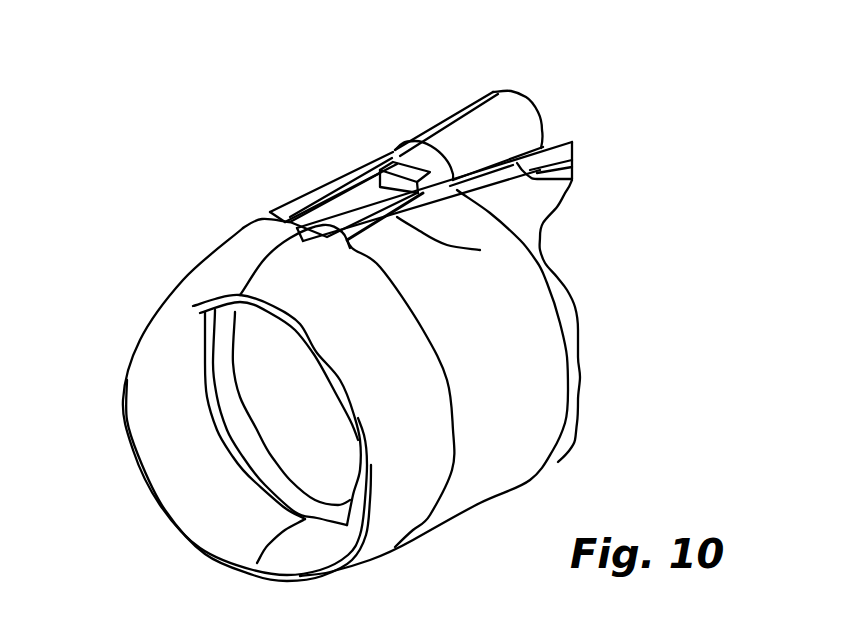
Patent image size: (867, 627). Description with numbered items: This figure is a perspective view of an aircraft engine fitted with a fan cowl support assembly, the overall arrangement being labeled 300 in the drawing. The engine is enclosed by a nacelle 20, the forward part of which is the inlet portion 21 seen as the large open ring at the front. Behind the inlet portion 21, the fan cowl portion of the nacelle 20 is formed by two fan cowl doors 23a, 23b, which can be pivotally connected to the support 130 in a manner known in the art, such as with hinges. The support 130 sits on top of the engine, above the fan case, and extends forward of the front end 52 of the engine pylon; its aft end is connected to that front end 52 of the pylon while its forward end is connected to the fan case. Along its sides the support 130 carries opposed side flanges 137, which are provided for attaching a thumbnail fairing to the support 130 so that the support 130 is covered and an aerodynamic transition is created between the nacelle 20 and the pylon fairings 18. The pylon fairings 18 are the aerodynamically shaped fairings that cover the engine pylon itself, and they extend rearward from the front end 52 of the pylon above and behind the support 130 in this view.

The connector assembly 300 is at (202, 159).
The inlet portion 21 is at (197, 283).
The nacelle 20 is at (183, 527).
The fan cowl door 23a is at (532, 376).
The fan cowl door 23b is at (275, 216).
The side flanges 137 is at (325, 187).
The support 130 is at (350, 203).
The front end of the engine pylon 52 is at (408, 160).
The pylon fairings 18 is at (517, 120).